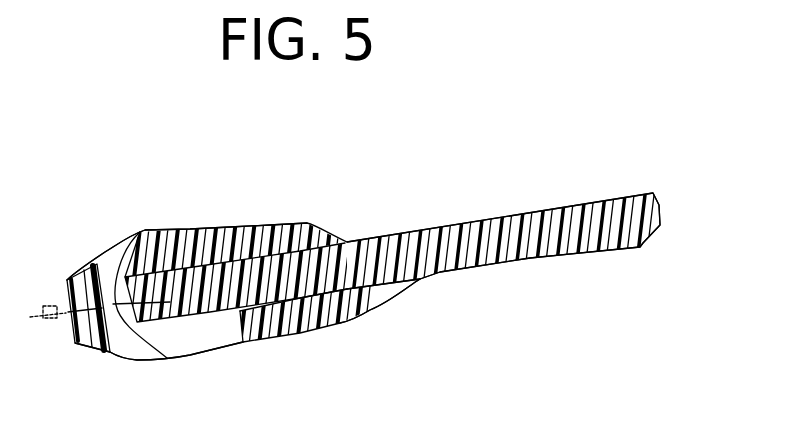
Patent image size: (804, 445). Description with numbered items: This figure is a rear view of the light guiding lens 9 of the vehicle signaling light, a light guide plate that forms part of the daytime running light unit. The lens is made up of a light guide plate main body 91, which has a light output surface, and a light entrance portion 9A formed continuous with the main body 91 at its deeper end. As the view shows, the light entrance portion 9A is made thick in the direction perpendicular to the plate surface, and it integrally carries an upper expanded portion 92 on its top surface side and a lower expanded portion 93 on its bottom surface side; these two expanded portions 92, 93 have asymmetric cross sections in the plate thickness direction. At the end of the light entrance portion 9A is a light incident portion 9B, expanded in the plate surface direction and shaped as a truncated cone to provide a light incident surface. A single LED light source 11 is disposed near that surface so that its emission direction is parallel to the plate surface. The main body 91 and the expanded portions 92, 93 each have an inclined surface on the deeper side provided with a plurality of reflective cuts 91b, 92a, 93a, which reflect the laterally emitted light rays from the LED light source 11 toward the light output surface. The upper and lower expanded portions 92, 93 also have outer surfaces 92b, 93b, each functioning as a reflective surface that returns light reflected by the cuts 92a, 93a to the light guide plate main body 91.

The light guiding lens 9 is at (393, 233).
The light entrance portion 9A is at (128, 236).
The light incident portion 9B is at (115, 355).
The LED light source 11 is at (43, 320).
The light guide plate main body 91 is at (501, 275).
The reflective cuts 91b is at (495, 219).
The upper expanded portion 92 is at (257, 273).
The reflective cuts 92a is at (230, 234).
The outer surface 92b is at (278, 223).
The lower expanded portion 93 is at (314, 292).
The reflective cuts 93a is at (295, 336).
The outer surface 93b is at (338, 330).